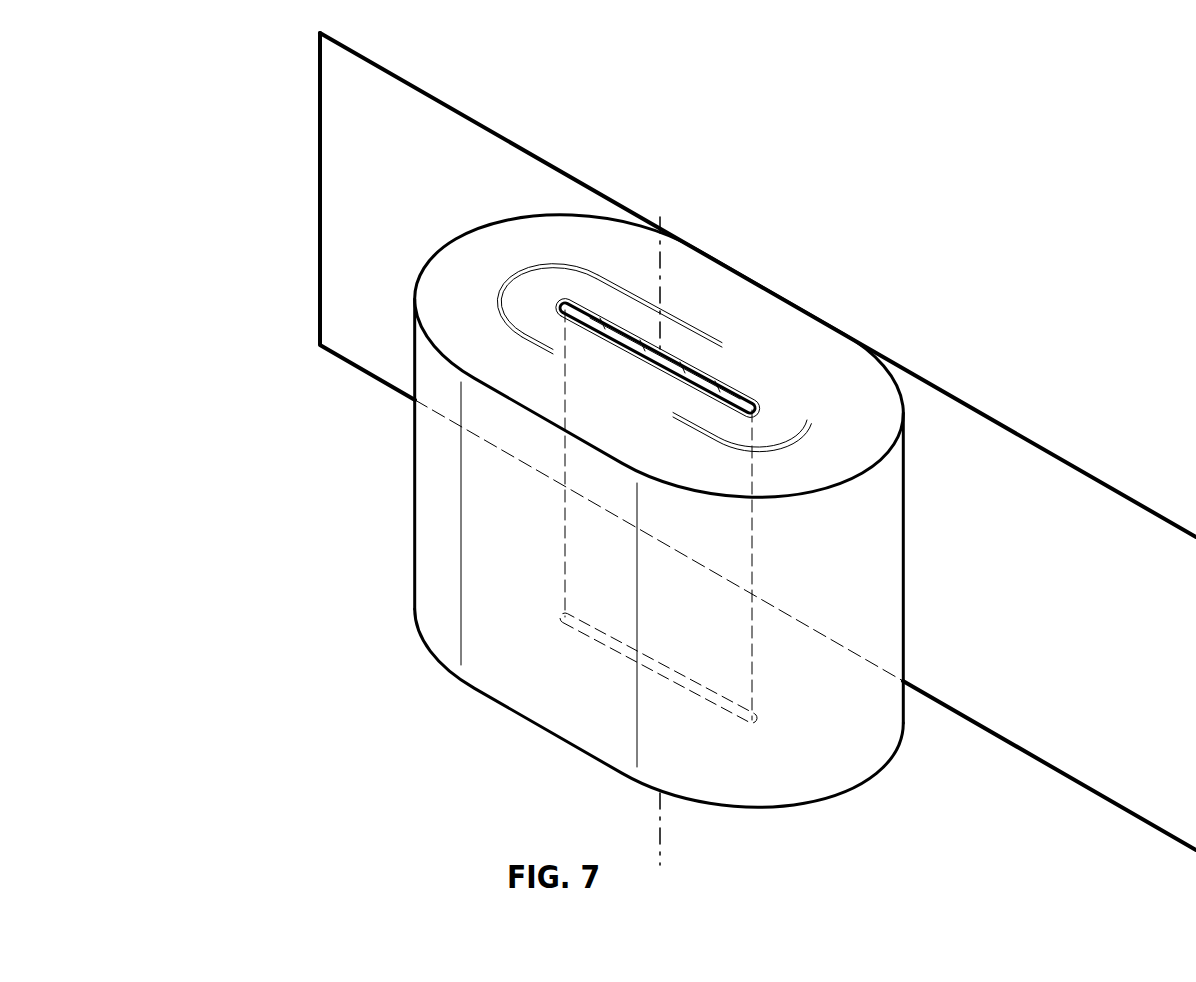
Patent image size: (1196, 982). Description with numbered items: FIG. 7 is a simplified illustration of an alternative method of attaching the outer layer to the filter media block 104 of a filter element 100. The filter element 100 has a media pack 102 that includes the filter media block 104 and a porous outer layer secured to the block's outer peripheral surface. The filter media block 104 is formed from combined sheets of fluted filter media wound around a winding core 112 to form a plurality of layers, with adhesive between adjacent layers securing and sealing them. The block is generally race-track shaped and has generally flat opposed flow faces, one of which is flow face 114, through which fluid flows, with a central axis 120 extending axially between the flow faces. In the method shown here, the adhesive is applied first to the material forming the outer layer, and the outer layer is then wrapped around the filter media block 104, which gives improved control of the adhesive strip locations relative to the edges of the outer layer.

The filter element 100 is at (686, 498).
The media pack 102 is at (772, 283).
The filter media block 104 is at (810, 334).
The winding core 112 is at (594, 314).
The flow face 114 is at (875, 373).
The central axis 120 is at (660, 217).